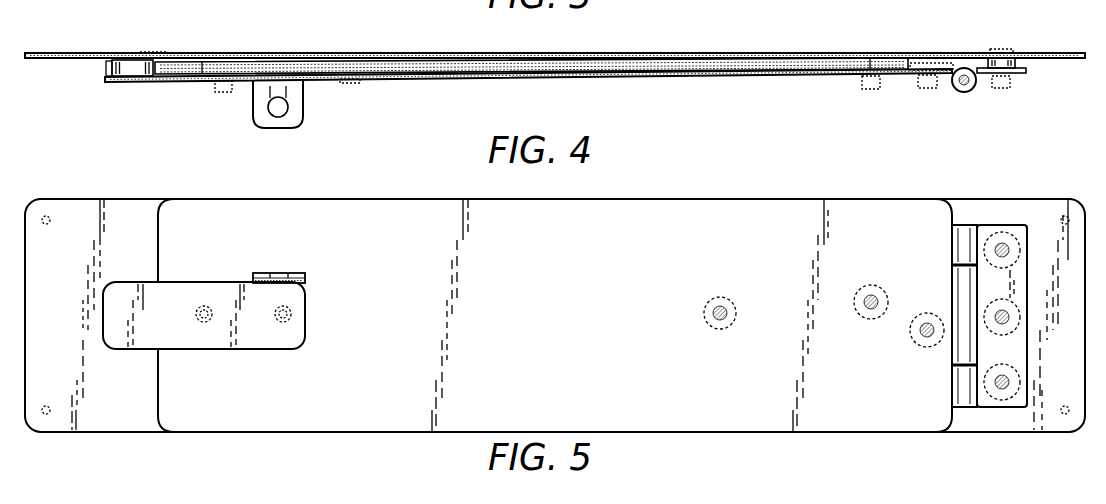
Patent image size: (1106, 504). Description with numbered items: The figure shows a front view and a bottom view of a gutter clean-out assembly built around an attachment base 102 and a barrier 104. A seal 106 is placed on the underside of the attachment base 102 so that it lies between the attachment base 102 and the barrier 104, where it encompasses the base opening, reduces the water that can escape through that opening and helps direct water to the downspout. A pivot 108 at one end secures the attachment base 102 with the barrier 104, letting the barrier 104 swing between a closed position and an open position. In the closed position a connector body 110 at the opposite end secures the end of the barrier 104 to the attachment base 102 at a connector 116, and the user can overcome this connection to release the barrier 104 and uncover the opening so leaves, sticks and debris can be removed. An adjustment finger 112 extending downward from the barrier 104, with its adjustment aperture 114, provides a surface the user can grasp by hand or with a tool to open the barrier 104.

In FIG. 4, the attachment base 102 is at (172, 53).
In FIG. 5, the attachment base 102 is at (1042, 230).
In FIG. 4, the barrier 104 is at (401, 77).
In FIG. 5, the barrier 104 is at (663, 228).
In FIG. 4, the seal 106 is at (349, 63).
In FIG. 4, the pivot 108 is at (974, 84).
In FIG. 5, the pivot 108 is at (965, 228).
In FIG. 4, the connector body 110 is at (147, 80).
In FIG. 5, the connector body 110 is at (204, 333).
In FIG. 4, the adjustment finger 112 is at (257, 121).
In FIG. 5, the adjustment finger 112 is at (278, 273).
In FIG. 4, the adjustment aperture 114 is at (290, 104).
In FIG. 4, the connector 116 is at (110, 67).